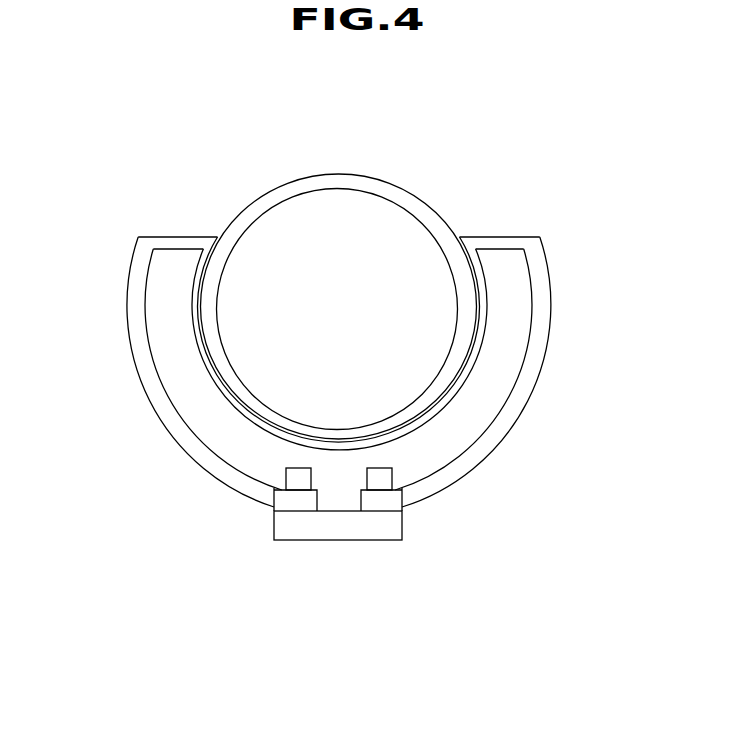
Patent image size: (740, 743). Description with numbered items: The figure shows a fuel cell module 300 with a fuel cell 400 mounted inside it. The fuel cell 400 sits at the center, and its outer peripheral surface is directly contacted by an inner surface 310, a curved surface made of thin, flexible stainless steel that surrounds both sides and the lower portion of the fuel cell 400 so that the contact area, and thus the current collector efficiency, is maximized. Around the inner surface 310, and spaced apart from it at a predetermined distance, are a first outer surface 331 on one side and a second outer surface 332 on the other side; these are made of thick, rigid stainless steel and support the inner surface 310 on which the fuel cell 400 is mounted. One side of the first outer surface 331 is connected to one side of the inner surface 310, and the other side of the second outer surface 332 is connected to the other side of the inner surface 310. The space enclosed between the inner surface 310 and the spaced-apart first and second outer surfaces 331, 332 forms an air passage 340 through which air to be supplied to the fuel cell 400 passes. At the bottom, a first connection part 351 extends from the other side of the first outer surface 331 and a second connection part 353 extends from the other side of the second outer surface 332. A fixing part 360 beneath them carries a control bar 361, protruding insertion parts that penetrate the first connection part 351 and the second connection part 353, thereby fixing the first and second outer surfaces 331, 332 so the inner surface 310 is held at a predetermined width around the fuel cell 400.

The fuel cell module 300 is at (532, 208).
The inner surface 310 is at (197, 327).
The first outer surface 331 is at (135, 288).
The second outer surface 332 is at (542, 287).
The air passage 340 is at (503, 327).
The first connection part 351 is at (298, 500).
The second connection part 353 is at (382, 502).
The fixing part 360 is at (340, 528).
The control bar 361 is at (387, 475).
The fuel cell 400 is at (335, 182).